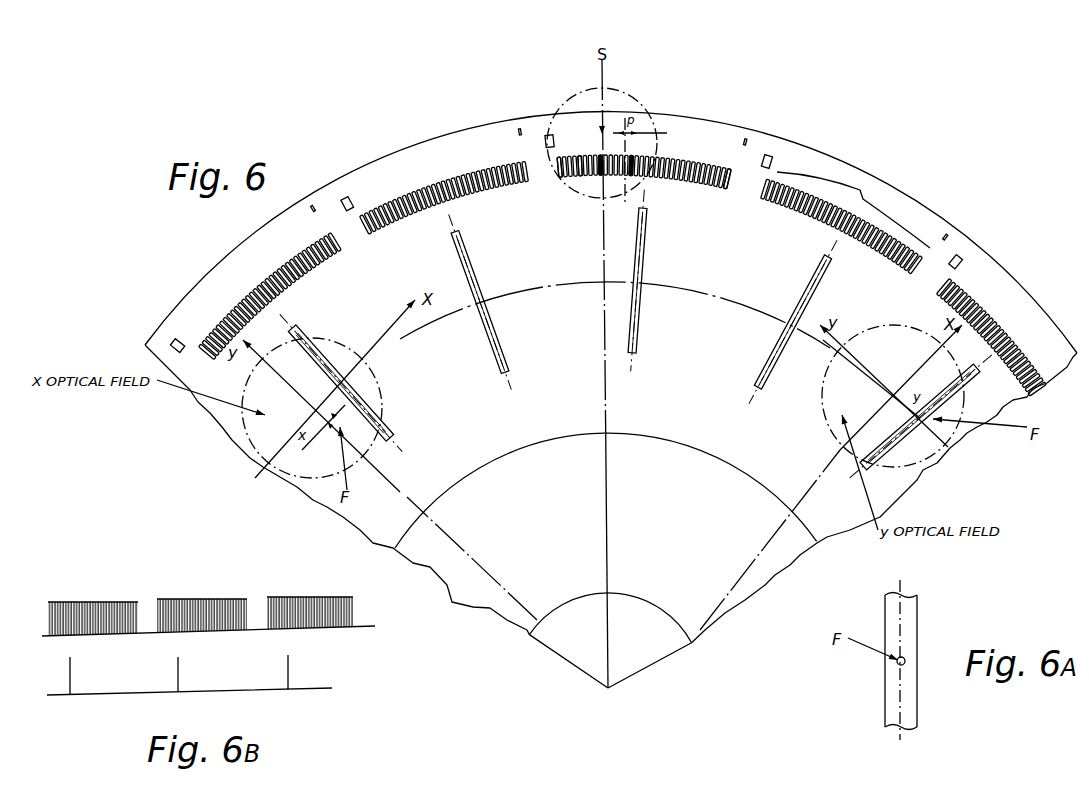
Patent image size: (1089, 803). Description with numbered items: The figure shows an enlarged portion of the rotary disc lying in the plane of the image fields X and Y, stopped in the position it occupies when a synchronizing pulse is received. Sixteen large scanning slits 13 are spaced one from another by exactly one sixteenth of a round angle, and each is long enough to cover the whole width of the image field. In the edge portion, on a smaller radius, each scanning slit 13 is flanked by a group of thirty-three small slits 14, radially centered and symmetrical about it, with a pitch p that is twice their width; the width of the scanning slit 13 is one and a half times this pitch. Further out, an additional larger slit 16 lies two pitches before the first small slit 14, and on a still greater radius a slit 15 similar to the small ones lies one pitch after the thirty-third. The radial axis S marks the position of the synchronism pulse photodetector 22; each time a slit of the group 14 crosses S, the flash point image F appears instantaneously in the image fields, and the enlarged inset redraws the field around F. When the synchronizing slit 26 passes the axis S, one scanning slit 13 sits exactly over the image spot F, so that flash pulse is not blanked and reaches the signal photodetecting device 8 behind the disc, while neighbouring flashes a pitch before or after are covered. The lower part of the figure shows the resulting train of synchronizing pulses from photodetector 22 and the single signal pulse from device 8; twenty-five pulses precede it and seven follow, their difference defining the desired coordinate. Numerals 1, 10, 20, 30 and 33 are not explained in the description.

In FIG. 6, the slot 1 is at (730, 178).
In FIG. 6, the slotted code track 10 is at (682, 178).
In FIG. 6, the scanning slit 13 is at (643, 270).
In FIG. 6, the small slits 14 is at (878, 197).
In FIG. 6, the slit 15 is at (748, 142).
In FIG. 6, the additional slit 16 is at (777, 153).
In FIG. 6, the slot 20 is at (631, 174).
In FIG. 6, the synchronizing slit 26 is at (602, 175).
In FIG. 6B, the synchronizing slit 26 is at (67, 597).
In FIG. 6, the slot 30 is at (582, 175).
In FIG. 6, the slot 33 is at (562, 175).
In FIG. 6B, the photodetector 22 is at (238, 585).
In FIG. 6B, the signal photodetecting device 8 is at (347, 680).